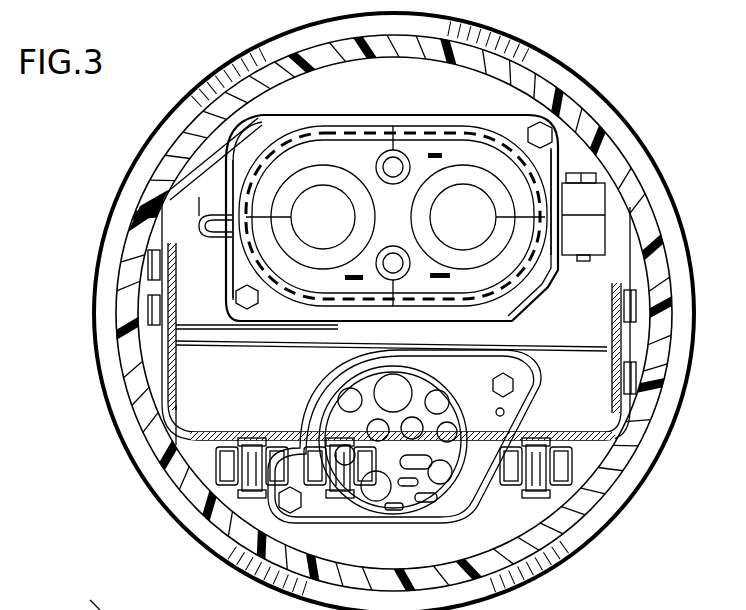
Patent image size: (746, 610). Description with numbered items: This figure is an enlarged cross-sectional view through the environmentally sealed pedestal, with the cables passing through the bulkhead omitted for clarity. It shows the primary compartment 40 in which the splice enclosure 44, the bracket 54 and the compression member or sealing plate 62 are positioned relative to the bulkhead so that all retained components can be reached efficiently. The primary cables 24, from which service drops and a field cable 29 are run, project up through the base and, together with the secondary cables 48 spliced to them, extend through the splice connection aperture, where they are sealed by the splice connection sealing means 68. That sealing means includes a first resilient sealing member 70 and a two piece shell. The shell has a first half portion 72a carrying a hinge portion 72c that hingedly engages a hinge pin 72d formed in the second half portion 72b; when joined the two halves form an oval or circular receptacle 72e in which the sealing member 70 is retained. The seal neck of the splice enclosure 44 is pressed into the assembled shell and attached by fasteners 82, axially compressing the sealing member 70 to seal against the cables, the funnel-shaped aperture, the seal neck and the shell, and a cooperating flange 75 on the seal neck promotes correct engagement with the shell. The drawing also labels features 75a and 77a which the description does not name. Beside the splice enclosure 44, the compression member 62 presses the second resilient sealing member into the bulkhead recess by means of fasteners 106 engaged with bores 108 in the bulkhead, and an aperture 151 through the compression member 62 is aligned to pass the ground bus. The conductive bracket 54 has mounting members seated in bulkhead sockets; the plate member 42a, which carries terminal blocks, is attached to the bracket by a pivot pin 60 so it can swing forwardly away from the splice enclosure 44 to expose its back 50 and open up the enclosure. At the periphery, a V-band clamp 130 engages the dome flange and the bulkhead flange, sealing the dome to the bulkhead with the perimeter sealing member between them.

The primary cable 24 is at (336, 228).
The field cable 29 is at (393, 256).
The primary compartment 40 is at (240, 390).
The plate member 42a is at (178, 445).
The splice enclosure 44 is at (515, 114).
The secondary cables 48 is at (400, 158).
The back of the plate member 50 is at (616, 430).
The bracket 54 is at (157, 277).
The pivot pin 60 is at (157, 297).
The compression member 62 is at (448, 500).
The splice connection sealing means 68 is at (278, 112).
The first resilient sealing member 70 is at (458, 272).
The first half portion 72a is at (500, 116).
The second half portion 72b is at (530, 292).
The hinge portion 72c is at (200, 190).
The hinge pin 72d is at (205, 226).
The receptacle 72e is at (318, 140).
The cooperating flange 75 is at (243, 267).
The flange lip 75a is at (266, 200).
The bolt 77a is at (393, 150).
The fasteners 82 is at (553, 130).
The fasteners 106 is at (505, 382).
The bores 108 is at (502, 412).
The V-band clamp 130 is at (240, 548).
The aperture 151 is at (71, 597).